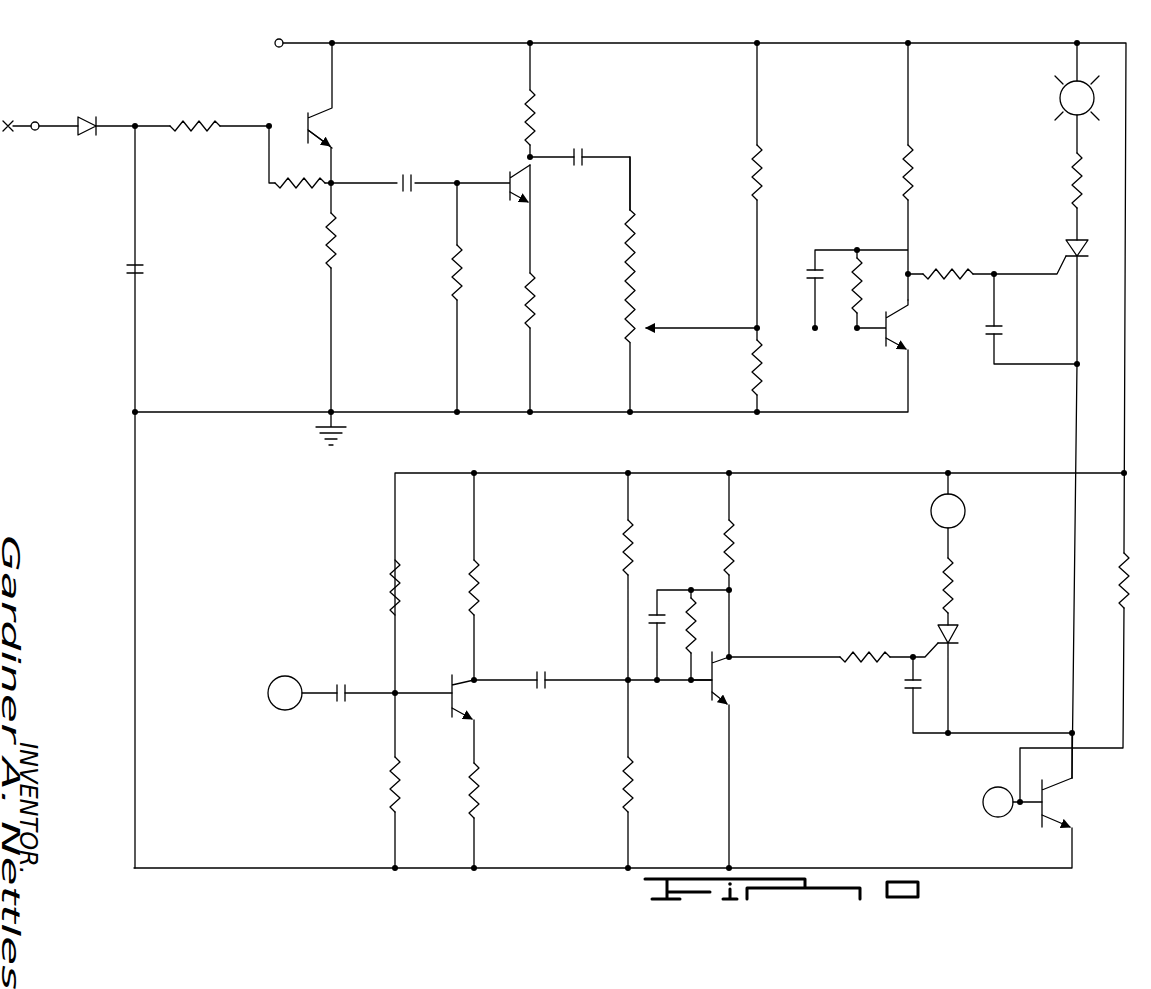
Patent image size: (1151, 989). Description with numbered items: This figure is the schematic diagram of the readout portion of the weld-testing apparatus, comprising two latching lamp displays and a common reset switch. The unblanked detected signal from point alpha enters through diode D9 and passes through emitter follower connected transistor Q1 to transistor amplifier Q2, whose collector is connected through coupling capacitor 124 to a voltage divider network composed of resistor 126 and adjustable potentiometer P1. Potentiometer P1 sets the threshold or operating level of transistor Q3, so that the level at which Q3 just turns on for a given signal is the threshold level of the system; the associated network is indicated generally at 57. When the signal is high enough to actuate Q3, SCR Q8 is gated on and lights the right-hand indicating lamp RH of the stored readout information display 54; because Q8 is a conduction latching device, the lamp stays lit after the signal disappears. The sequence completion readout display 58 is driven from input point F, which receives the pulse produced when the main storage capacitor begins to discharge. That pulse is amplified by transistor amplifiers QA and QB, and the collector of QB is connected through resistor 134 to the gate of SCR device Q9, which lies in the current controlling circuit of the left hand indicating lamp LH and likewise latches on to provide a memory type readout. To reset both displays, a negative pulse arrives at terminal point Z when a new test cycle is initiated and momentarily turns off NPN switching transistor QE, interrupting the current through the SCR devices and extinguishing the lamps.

The diode D9 is at (87, 115).
The emitter follower connected transistor Q1 is at (323, 118).
The transistor amplifier Q2 is at (527, 188).
The coupling capacitor 124 is at (575, 146).
The resistor 126 is at (633, 214).
The adjustable potentiometer P1 is at (633, 310).
The timing circuit 57 is at (653, 263).
The transistor Q3 is at (895, 333).
The stored readout information display 54 is at (1057, 205).
The SCR Q8 is at (1066, 252).
The right-hand indicating lamp RH is at (1078, 98).
The left hand indicating lamp LH is at (949, 511).
The sequence completion readout display 58 is at (969, 586).
The SCR device Q9 is at (955, 633).
The resistor 134 is at (893, 622).
The transistor amplifier QB is at (718, 680).
The transistor amplifier QA is at (457, 698).
The input point F is at (285, 693).
The terminal point Z is at (998, 802).
The NPN switching transistor QE is at (1037, 810).